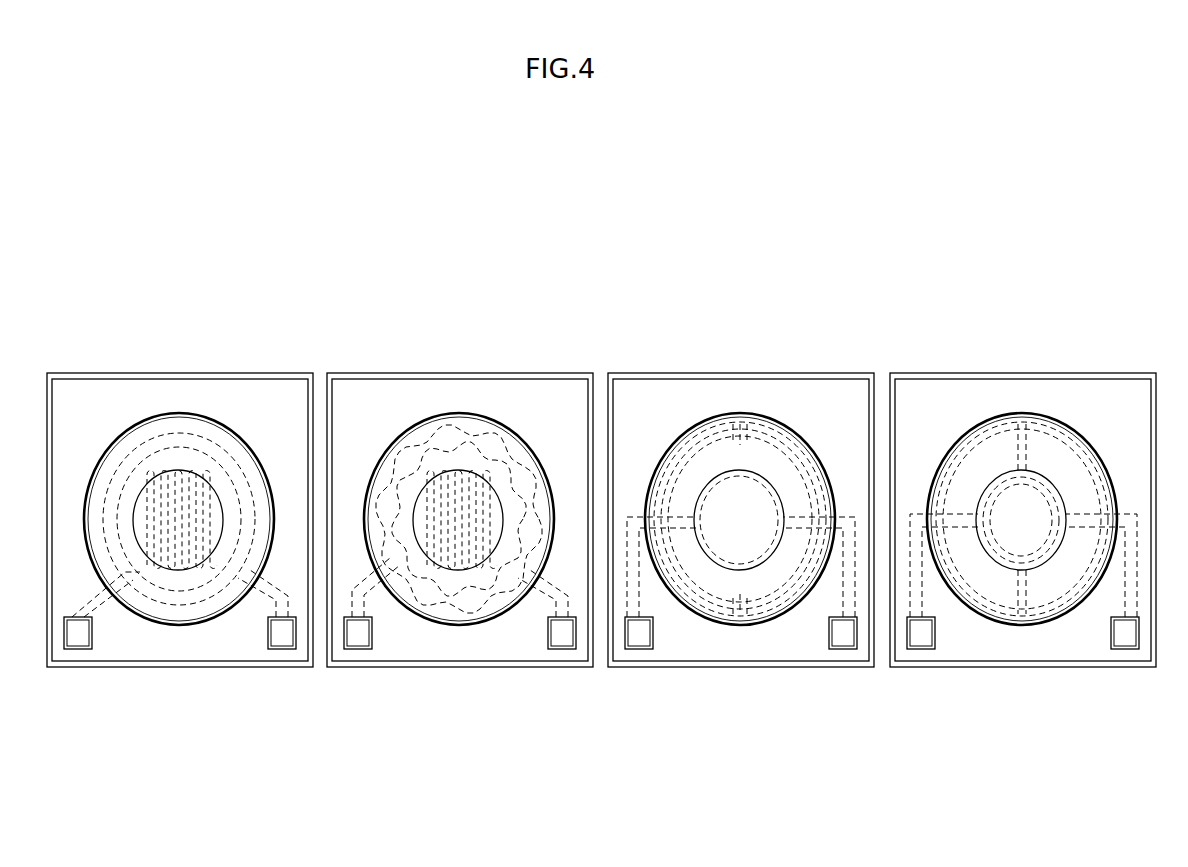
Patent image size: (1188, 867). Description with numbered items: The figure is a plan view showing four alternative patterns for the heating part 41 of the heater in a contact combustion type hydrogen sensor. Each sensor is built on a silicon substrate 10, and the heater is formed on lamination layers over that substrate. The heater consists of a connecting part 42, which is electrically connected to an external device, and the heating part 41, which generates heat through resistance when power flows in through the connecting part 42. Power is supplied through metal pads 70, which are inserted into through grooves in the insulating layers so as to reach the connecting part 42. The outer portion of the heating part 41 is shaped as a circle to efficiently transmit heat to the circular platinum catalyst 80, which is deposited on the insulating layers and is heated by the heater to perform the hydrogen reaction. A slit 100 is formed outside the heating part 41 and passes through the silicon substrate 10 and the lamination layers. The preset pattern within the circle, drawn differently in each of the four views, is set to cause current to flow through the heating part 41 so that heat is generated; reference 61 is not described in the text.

The silicon substrate 10 is at (288, 364).
The slit 100 is at (210, 415).
The outer coil pattern 61 is at (126, 432).
The heating part 41 is at (173, 437).
The platinum catalyst 80 is at (162, 507).
The metal pad 70 is at (79, 637).
The connecting part 42 is at (92, 634).